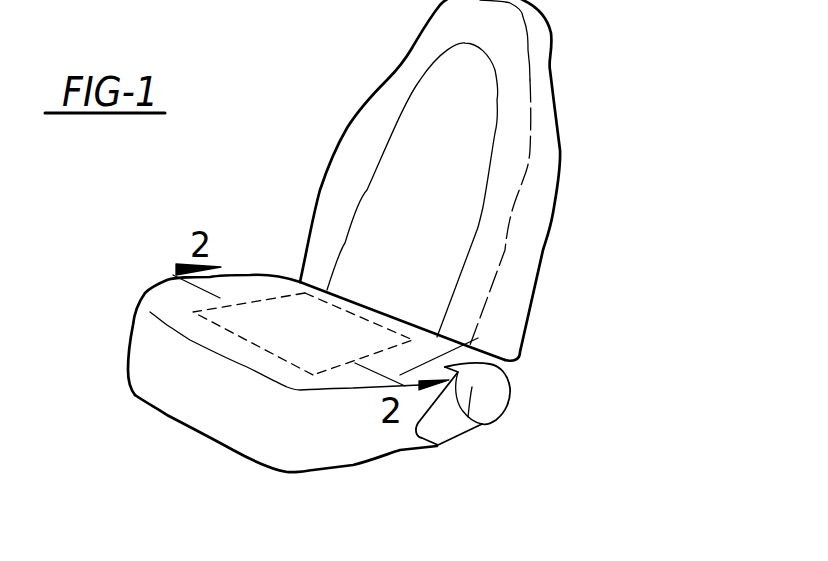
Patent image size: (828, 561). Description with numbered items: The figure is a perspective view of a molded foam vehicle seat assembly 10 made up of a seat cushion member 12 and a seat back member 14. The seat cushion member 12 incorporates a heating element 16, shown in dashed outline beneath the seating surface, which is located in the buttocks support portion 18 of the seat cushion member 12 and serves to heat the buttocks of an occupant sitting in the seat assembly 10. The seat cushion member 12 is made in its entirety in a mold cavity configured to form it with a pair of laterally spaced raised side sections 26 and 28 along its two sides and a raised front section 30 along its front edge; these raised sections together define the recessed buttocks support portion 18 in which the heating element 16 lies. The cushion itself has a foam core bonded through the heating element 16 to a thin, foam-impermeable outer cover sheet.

The vehicle seat assembly 10 is at (638, 118).
The seat cushion member 12 is at (366, 470).
The seat back member 14 is at (566, 226).
The heating element 16 is at (262, 298).
The buttocks support portion 18 is at (354, 323).
The raised side section 26 is at (147, 308).
The raised side section 28 is at (503, 393).
The raised front section 30 is at (218, 373).